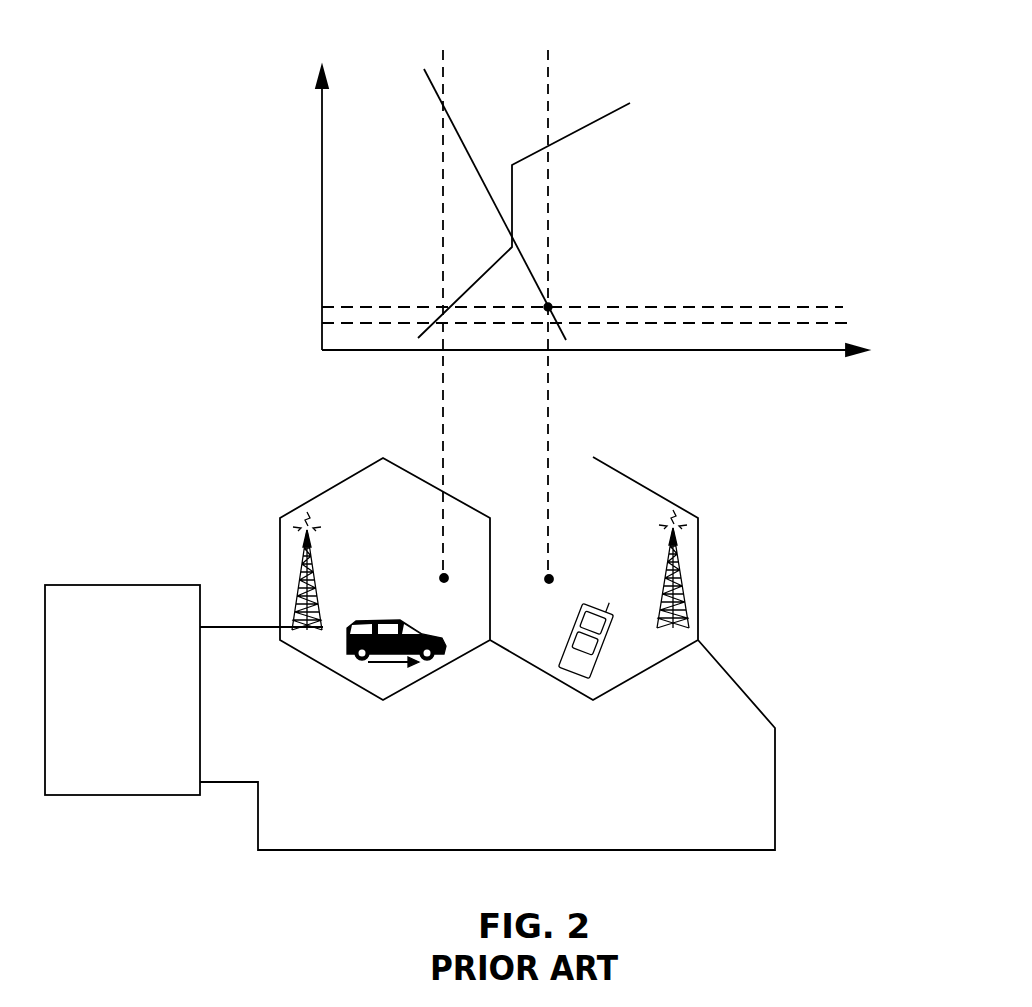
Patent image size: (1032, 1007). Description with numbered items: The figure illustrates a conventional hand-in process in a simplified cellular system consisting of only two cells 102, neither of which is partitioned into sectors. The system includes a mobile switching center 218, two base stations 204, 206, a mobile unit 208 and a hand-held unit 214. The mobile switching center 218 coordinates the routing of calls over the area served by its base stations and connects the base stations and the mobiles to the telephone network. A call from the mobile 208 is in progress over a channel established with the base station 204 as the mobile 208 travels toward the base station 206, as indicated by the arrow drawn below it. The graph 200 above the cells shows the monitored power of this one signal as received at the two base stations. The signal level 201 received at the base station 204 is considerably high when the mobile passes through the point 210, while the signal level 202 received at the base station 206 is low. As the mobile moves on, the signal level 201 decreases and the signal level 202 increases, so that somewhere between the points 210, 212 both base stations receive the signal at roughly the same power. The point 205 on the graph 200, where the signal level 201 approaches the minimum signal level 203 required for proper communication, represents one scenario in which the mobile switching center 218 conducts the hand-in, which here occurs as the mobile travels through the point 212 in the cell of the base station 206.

The graph 200 is at (594, 229).
The signal level 201 is at (430, 80).
The signal level 202 is at (630, 103).
The minimum signal level 203 is at (850, 323).
The point 205 is at (548, 307).
The point 210 is at (444, 578).
The point 212 is at (549, 579).
The cells 102 is at (593, 700).
The base station 204 is at (284, 628).
The base station 206 is at (690, 622).
The mobile unit 208 is at (347, 648).
The hand-held unit 214 is at (605, 647).
The mobile switching center 218 is at (125, 795).